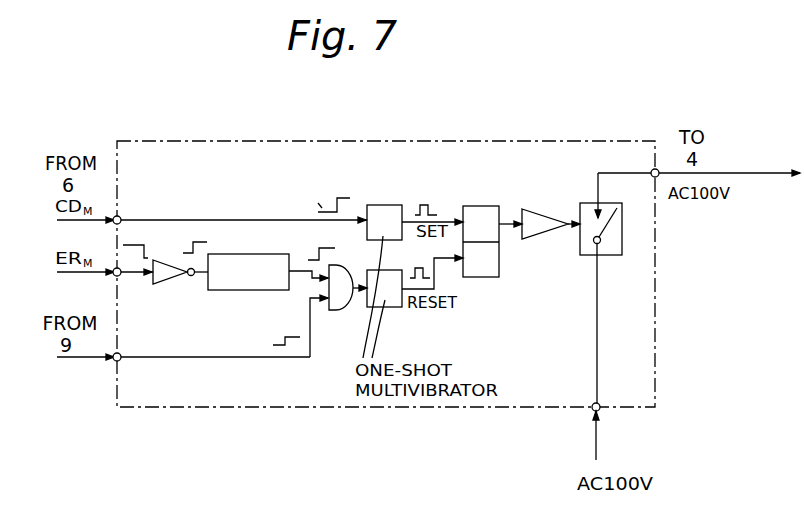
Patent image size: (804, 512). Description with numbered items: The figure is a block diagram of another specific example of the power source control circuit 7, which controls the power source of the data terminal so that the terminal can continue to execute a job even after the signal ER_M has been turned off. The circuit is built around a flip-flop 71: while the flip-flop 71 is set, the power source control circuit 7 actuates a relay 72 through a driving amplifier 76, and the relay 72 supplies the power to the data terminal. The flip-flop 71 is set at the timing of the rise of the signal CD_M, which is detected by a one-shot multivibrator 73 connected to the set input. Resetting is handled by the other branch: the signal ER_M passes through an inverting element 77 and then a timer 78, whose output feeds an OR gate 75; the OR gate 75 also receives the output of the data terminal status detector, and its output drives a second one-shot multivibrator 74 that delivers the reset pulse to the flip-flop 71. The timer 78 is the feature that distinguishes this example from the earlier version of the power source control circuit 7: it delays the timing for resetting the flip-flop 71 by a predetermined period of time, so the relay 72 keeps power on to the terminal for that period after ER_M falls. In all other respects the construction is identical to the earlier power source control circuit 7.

The power source control circuit 7 is at (268, 141).
The flip-flop 71 is at (483, 206).
The relay 72 is at (588, 203).
The one-shot multivibrator 73 is at (383, 205).
The one-shot multivibrator 74 is at (388, 308).
The OR gate 75 is at (340, 311).
The driving amplifier 76 is at (540, 240).
The inverter 77 is at (166, 283).
The timer 78 is at (242, 291).